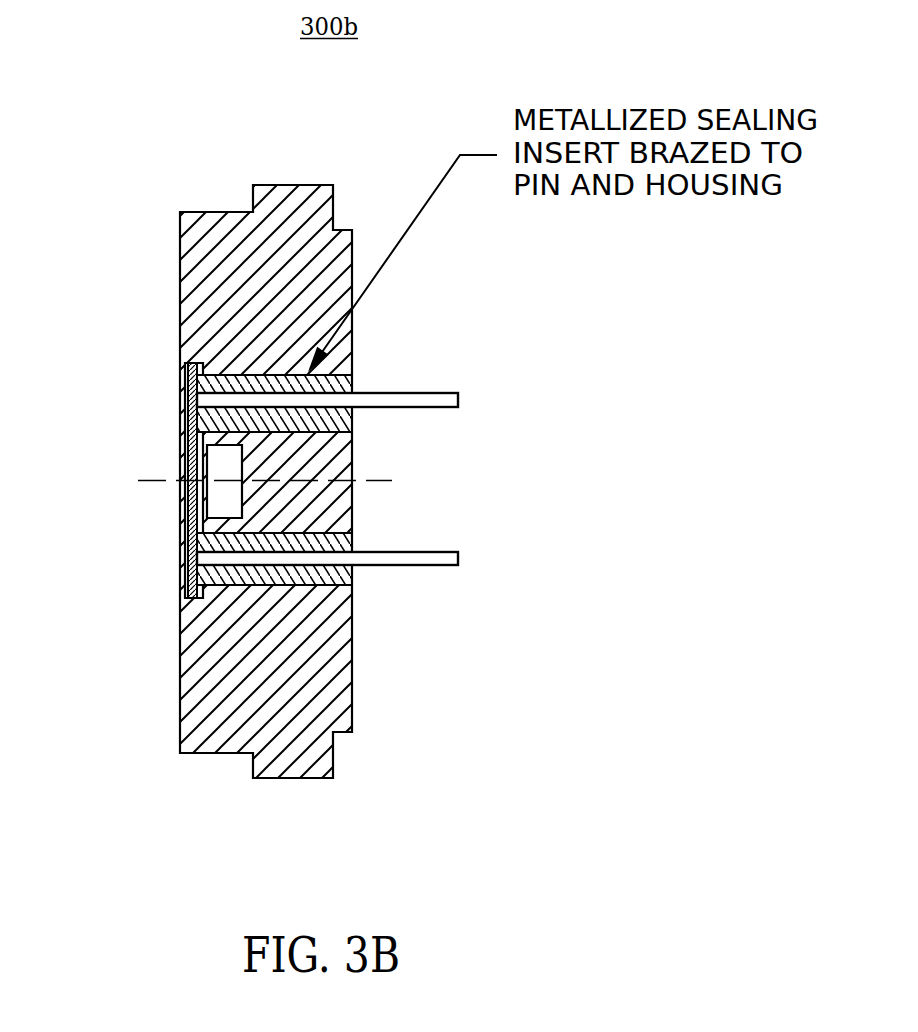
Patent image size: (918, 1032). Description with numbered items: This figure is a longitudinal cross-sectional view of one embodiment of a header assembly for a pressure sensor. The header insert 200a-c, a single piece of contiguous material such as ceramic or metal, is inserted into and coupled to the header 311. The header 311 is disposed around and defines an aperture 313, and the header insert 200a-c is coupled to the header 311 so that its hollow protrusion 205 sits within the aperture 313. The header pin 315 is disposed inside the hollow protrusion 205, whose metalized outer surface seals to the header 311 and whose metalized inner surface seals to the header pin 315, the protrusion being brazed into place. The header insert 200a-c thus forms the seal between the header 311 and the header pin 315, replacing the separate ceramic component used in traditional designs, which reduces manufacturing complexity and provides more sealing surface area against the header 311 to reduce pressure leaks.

The header 311 is at (318, 186).
The hollow protrusion 205 is at (318, 383).
The aperture 313 is at (372, 366).
The header pin 315 is at (438, 398).
The header insert 200a-c is at (142, 493).